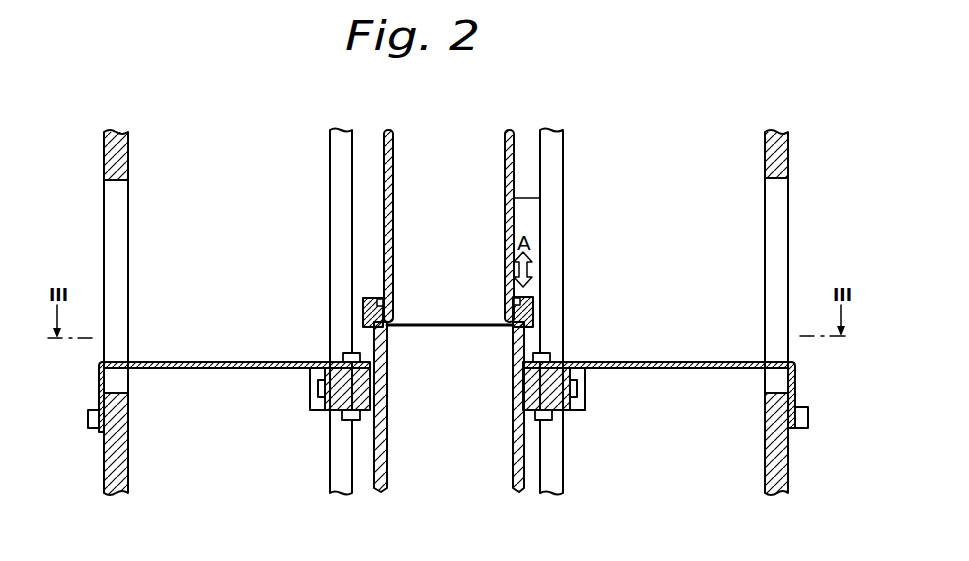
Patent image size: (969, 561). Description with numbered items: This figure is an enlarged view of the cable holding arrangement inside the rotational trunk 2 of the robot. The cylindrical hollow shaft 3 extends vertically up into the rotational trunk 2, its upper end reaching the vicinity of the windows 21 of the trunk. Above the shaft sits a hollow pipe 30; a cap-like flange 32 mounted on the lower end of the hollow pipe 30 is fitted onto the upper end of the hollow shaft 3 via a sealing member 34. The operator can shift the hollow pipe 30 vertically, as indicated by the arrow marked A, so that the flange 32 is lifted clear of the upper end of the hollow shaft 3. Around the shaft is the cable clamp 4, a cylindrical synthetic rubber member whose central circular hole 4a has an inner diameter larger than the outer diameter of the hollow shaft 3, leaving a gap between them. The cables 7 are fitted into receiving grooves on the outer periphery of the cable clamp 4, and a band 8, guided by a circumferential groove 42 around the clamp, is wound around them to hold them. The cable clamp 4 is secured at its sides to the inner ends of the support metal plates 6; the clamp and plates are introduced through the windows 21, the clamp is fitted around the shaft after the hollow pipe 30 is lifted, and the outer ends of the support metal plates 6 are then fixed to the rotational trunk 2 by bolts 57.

The rotational trunk 2 is at (110, 470).
The windows 21 is at (110, 228).
The hollow shaft 3 is at (386, 458).
The cable clamp 4 is at (578, 408).
The circular hole 4a is at (380, 388).
The support metal plates 6 is at (210, 368).
The cables 7 is at (338, 190).
The band 8 is at (322, 388).
The hollow pipe 30 is at (540, 198).
The flange 32 is at (533, 305).
The sealing member 34 is at (520, 298).
The circumferential groove 42 is at (312, 396).
The bolts 57 is at (89, 418).